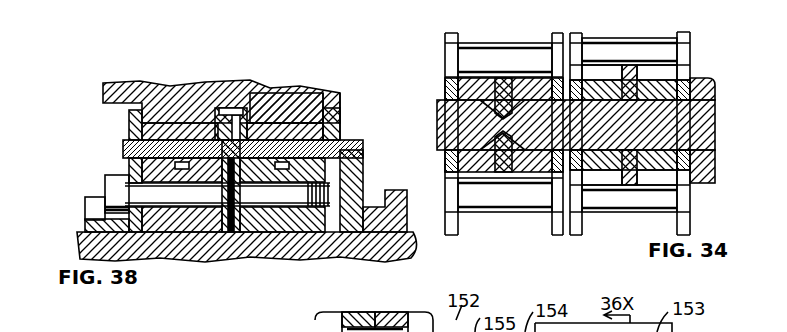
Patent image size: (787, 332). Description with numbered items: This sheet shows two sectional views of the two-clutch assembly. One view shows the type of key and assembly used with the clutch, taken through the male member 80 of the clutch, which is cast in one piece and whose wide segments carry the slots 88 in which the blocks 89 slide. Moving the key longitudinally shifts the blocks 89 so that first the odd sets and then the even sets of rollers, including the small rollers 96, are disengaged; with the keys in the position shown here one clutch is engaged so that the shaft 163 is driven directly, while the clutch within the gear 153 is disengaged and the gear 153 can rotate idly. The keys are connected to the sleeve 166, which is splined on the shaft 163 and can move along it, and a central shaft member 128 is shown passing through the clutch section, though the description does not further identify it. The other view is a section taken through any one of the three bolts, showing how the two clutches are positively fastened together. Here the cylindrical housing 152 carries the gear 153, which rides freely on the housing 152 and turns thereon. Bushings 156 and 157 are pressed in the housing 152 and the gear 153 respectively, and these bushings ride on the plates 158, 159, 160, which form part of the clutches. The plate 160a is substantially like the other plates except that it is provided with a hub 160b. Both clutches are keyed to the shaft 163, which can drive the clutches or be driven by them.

In FIG. 38, the male member 80 is at (167, 234).
In FIG. 34, the male member 80 is at (534, 172).
In FIG. 38, the slots 88 is at (190, 177).
In FIG. 34, the blocks 89 is at (505, 93).
In FIG. 34, the small rollers 96 is at (470, 61).
In FIG. 38, the shaft 128 is at (123, 148).
In FIG. 34, the shaft 128 is at (455, 120).
In FIG. 38, the cylindrical housing 152 is at (196, 104).
In FIG. 38, the gear 153 is at (311, 109).
In FIG. 38, the bushing 156 is at (238, 109).
In FIG. 38, the bushing 157 is at (341, 105).
In FIG. 38, the plate 158 is at (341, 121).
In FIG. 34, the plate 158 is at (691, 225).
In FIG. 38, the plate 159 is at (242, 240).
In FIG. 34, the plate 159 is at (586, 223).
In FIG. 38, the plate 160 is at (225, 234).
In FIG. 34, the plate 160 is at (557, 223).
In FIG. 38, the plate 160a is at (130, 122).
In FIG. 34, the plate 160a is at (452, 224).
In FIG. 38, the hub 160b is at (107, 190).
In FIG. 38, the shaft 163 is at (380, 254).
In FIG. 38, the sleeve 166 is at (397, 192).
In FIG. 34, the sleeve 166 is at (716, 82).